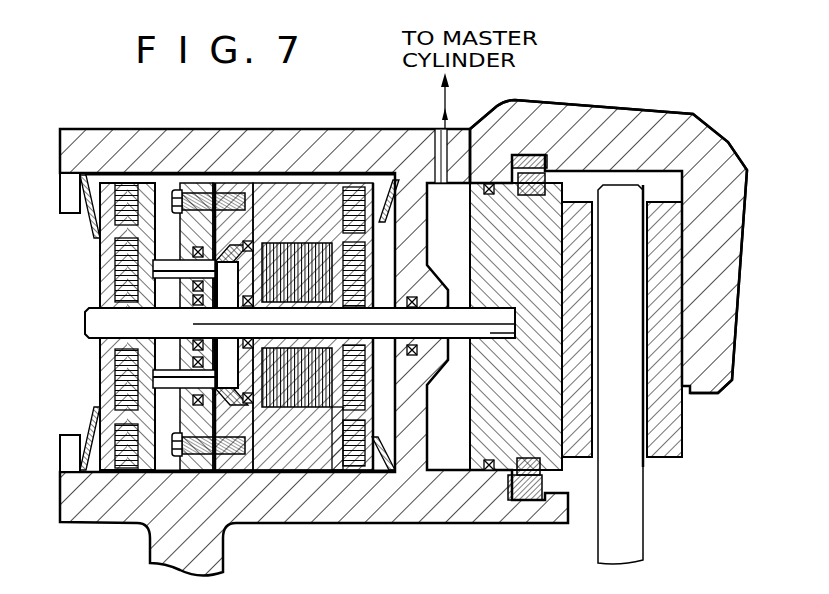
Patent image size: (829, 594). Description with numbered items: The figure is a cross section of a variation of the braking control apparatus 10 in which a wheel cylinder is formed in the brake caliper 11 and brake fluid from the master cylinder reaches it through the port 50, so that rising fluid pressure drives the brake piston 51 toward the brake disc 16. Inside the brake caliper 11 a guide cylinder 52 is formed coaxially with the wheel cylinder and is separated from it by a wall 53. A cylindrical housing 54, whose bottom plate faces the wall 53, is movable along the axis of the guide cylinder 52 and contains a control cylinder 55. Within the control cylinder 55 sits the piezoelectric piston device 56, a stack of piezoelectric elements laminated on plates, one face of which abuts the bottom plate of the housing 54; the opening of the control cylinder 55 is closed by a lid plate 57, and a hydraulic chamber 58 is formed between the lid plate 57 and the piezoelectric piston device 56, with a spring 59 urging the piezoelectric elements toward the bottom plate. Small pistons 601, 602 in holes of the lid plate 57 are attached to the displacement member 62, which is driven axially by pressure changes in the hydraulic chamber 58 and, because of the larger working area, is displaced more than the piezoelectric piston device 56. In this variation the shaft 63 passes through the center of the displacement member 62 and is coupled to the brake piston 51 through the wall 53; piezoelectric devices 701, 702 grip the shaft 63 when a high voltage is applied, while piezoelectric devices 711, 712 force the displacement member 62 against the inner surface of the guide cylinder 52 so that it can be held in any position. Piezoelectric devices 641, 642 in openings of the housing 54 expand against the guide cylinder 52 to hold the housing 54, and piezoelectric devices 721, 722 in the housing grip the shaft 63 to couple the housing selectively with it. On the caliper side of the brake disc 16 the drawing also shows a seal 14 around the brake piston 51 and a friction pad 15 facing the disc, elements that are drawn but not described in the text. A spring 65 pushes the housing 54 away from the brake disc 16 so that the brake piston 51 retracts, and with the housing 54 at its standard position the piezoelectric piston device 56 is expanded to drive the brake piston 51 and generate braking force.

The braking control apparatus 10 is at (679, 107).
The brake caliper 11 is at (591, 120).
The piston seal 14 is at (573, 458).
The outer friction pad 15 is at (665, 425).
The brake disc 16 is at (630, 494).
The port 50 is at (438, 134).
The brake piston 51 is at (505, 372).
The guide cylinder 52 is at (90, 170).
The wall 53 is at (412, 450).
The housing 54 is at (238, 457).
The control cylinder 55 is at (340, 445).
The piezoelectric piston device 56 is at (300, 250).
The lid plate 57 is at (200, 192).
The hydraulic chamber 58 is at (250, 240).
The spring 59 is at (299, 407).
The displacement member 62 is at (110, 287).
The shaft 63 is at (94, 318).
The spring 65 is at (387, 212).
The small piston 601 is at (167, 262).
The small piston 602 is at (162, 373).
The piezoelectric device 641 is at (354, 188).
The piezoelectric device 642 is at (355, 458).
The piezoelectric device 701 is at (122, 353).
The piezoelectric device 702 is at (127, 252).
The piezoelectric device 711 is at (128, 188).
The piezoelectric device 712 is at (121, 455).
The piezoelectric device 721 is at (360, 270).
The piezoelectric device 722 is at (362, 392).